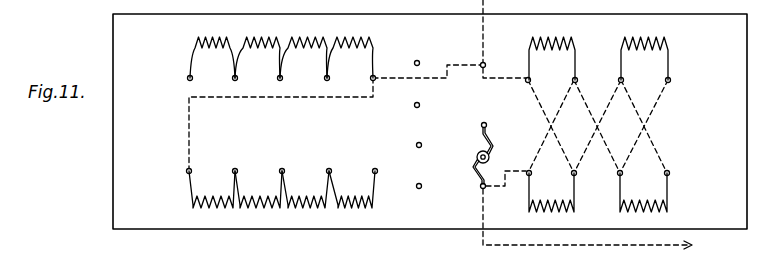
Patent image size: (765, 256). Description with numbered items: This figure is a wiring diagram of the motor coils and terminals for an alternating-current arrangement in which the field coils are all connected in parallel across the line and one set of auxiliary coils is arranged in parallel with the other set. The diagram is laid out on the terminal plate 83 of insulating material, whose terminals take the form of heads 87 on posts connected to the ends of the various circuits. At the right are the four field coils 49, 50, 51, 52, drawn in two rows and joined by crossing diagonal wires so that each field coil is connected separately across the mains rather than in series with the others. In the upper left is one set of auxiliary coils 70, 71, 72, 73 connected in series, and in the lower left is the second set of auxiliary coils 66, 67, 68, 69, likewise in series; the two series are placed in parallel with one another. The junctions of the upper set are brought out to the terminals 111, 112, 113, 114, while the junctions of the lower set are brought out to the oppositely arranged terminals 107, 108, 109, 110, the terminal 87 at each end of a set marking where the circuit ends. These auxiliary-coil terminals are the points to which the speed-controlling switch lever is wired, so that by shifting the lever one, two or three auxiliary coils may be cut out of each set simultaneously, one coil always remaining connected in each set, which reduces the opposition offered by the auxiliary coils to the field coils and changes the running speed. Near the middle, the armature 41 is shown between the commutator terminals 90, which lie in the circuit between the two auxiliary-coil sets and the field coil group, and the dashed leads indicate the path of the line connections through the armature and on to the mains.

The armature 41 is at (490, 157).
The field coil 49 is at (671, 43).
The field coil 50 is at (577, 40).
The field coil 51 is at (668, 206).
The field coil 52 is at (575, 206).
The auxiliary coil 66 is at (260, 210).
The auxiliary coil 67 is at (306, 210).
The auxiliary coil 68 is at (352, 210).
The auxiliary coil 69 is at (200, 210).
The auxiliary coil 70 is at (209, 40).
The auxiliary coil 71 is at (348, 40).
The auxiliary coil 72 is at (304, 40).
The auxiliary coil 73 is at (258, 40).
The terminal plate 83 is at (701, 127).
The terminal head 87 is at (192, 76).
The commutator terminal 90 is at (486, 123).
The auxiliary-coil terminal 107 is at (331, 169).
The auxiliary-coil terminal 108 is at (284, 169).
The auxiliary-coil terminal 109 is at (237, 169).
The auxiliary-coil terminal 110 is at (187, 170).
The auxiliary-coil terminal 111 is at (329, 80).
The auxiliary-coil terminal 112 is at (282, 80).
The auxiliary-coil terminal 113 is at (237, 80).
The auxiliary-coil terminal 114 is at (188, 79).